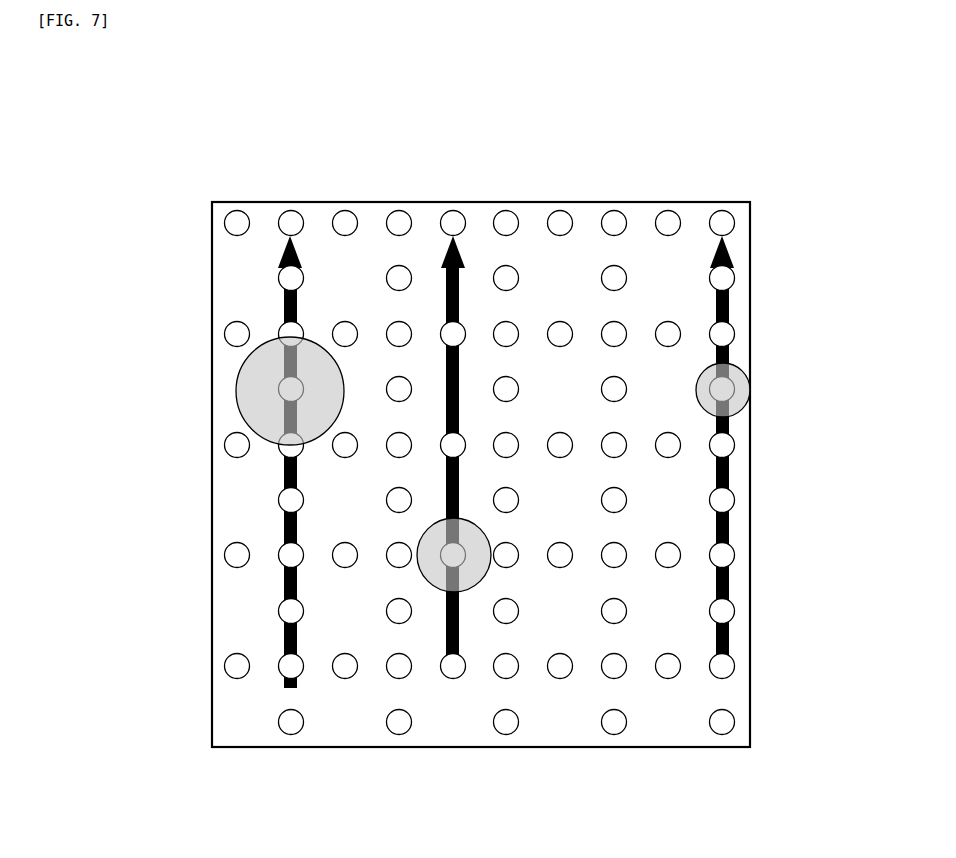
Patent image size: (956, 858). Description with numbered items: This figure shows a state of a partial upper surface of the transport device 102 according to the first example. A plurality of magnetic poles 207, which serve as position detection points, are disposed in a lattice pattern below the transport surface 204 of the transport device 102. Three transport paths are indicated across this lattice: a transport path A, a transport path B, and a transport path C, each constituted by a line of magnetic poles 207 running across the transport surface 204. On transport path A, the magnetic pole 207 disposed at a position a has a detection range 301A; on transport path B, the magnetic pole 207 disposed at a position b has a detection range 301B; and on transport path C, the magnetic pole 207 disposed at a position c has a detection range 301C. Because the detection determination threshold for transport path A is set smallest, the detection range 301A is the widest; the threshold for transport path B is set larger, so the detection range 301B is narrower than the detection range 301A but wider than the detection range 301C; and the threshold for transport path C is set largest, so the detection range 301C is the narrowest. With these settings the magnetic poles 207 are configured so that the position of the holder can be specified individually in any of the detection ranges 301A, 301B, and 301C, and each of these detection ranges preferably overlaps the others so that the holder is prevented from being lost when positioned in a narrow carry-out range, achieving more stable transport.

The transport device 102 is at (515, 412).
The transport surface 204 is at (638, 213).
The magnetic pole 207 is at (345, 223).
The detection range 301A is at (237, 397).
The detection range 301B is at (418, 566).
The detection range 301C is at (750, 392).
The transport path A is at (288, 308).
The transport path B is at (463, 272).
The transport path C is at (730, 317).
The position a is at (290, 388).
The position b is at (463, 563).
The position c is at (725, 395).